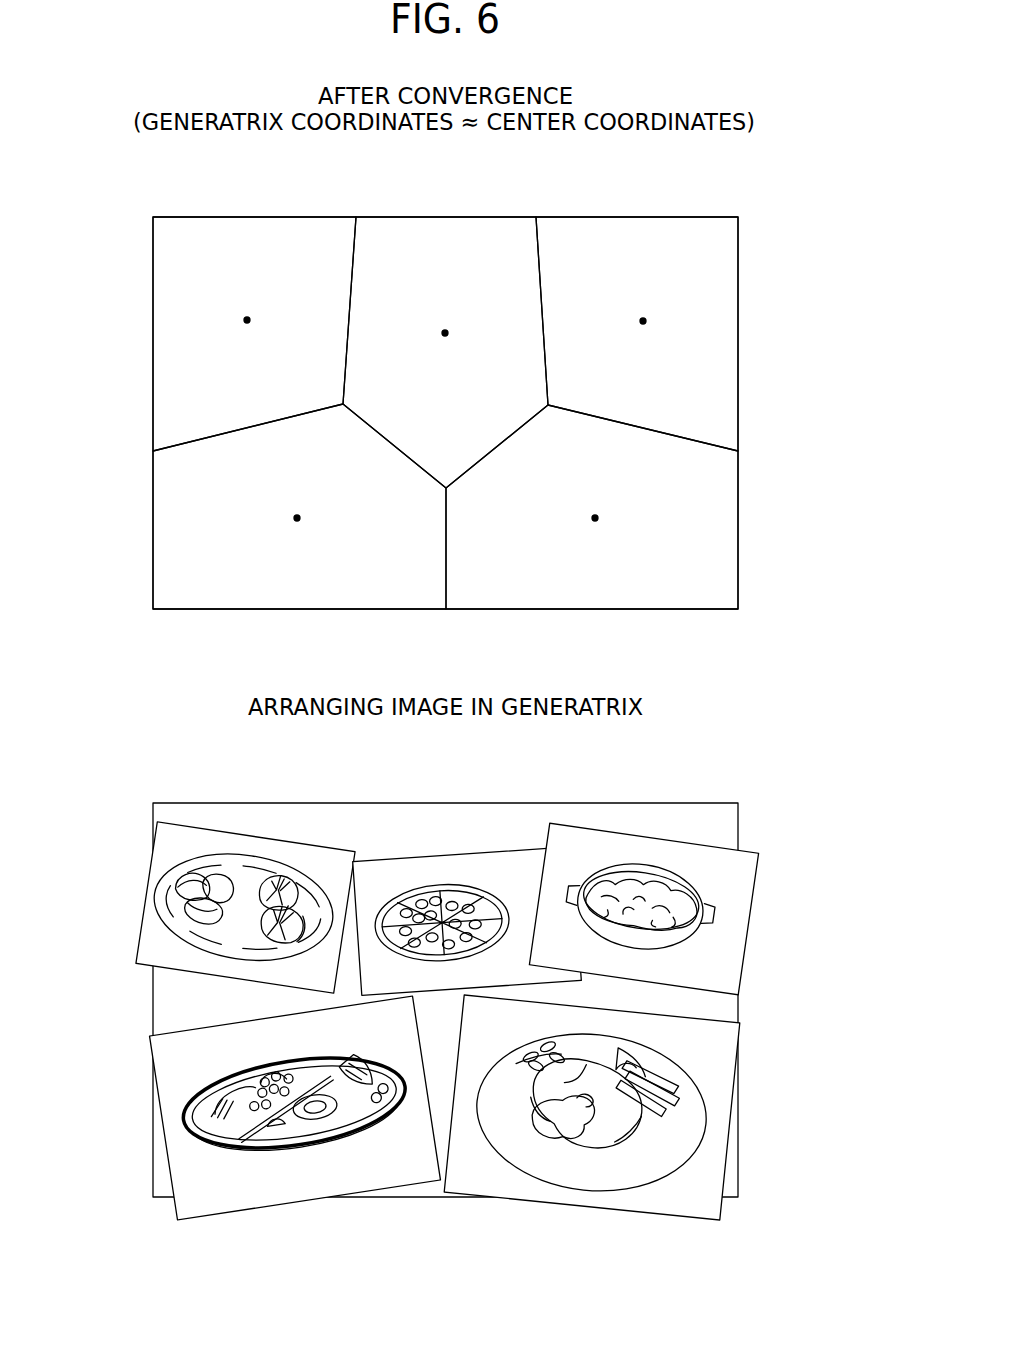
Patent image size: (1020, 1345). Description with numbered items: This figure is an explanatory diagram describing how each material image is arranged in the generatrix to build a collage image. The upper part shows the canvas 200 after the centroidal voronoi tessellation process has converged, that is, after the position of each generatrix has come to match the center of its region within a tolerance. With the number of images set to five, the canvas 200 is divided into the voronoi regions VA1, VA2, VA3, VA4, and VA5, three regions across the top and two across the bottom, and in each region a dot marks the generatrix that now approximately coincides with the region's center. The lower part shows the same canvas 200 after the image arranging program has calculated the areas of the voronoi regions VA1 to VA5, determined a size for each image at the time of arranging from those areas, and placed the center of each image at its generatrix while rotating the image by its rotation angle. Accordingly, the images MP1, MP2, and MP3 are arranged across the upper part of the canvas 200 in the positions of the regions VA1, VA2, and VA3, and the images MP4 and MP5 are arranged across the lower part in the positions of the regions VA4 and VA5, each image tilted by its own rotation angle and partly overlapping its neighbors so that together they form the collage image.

The canvas 200 is at (670, 217).
The voronoi region VA1 is at (270, 266).
The voronoi region VA2 is at (466, 266).
The voronoi region VA3 is at (664, 266).
The voronoi region VA4 is at (319, 479).
The voronoi region VA5 is at (616, 479).
The image MP1 is at (245, 832).
The image MP2 is at (428, 852).
The image MP3 is at (608, 827).
The image MP4 is at (210, 1022).
The image MP5 is at (602, 1210).